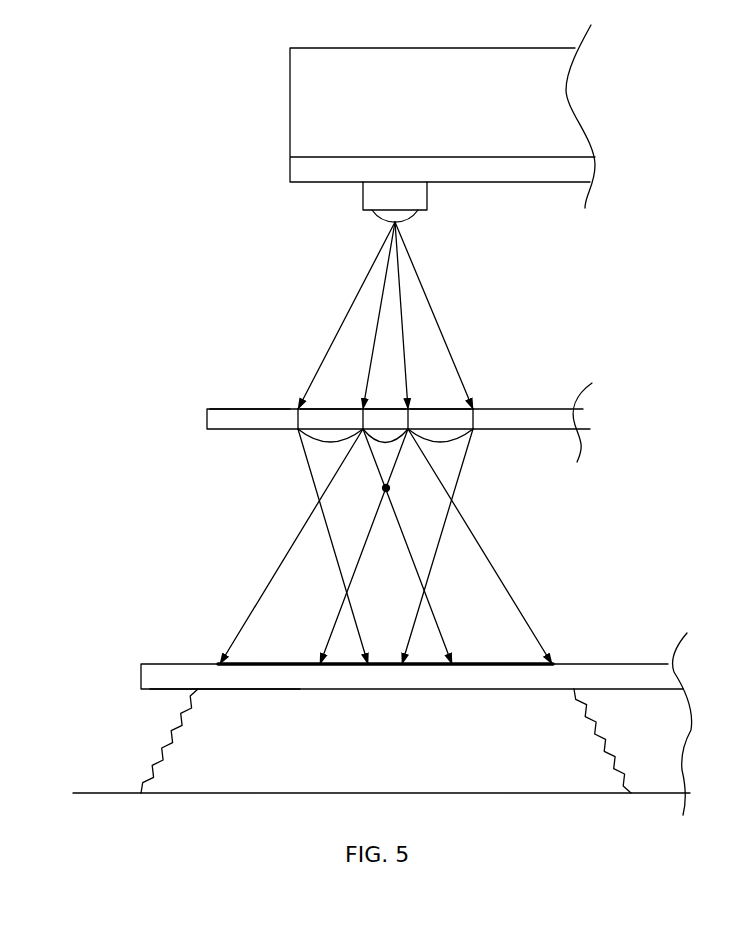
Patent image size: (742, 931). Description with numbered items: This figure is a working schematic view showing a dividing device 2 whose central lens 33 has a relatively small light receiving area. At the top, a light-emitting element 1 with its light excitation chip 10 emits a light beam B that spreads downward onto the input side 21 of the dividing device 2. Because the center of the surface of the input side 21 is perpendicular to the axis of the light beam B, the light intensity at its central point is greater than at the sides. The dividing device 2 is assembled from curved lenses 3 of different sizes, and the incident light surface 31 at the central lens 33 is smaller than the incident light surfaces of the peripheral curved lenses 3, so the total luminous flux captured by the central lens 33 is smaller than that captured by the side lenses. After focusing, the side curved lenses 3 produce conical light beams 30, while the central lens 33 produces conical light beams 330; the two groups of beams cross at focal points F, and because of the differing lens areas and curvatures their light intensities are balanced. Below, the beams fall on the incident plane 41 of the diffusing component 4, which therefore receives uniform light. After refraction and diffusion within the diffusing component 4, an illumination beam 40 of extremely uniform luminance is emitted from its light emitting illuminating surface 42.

The light-emitting element 1 is at (392, 195).
The light excitation chip 10 is at (328, 213).
The dividing device 2 is at (215, 418).
The input side 21 is at (247, 405).
The curved lenses 3 is at (392, 418).
The incident light surface 31 is at (330, 407).
The central lens 33 is at (387, 405).
The conical light beams 30 is at (243, 612).
The conical light beams 330 is at (368, 568).
The diffusing component 4 is at (155, 677).
The incident plane 41 is at (168, 663).
The light emitting illuminating surface 42 is at (168, 690).
The illumination beam 40 is at (170, 745).
The light beam B is at (385, 315).
The focal point F is at (396, 490).